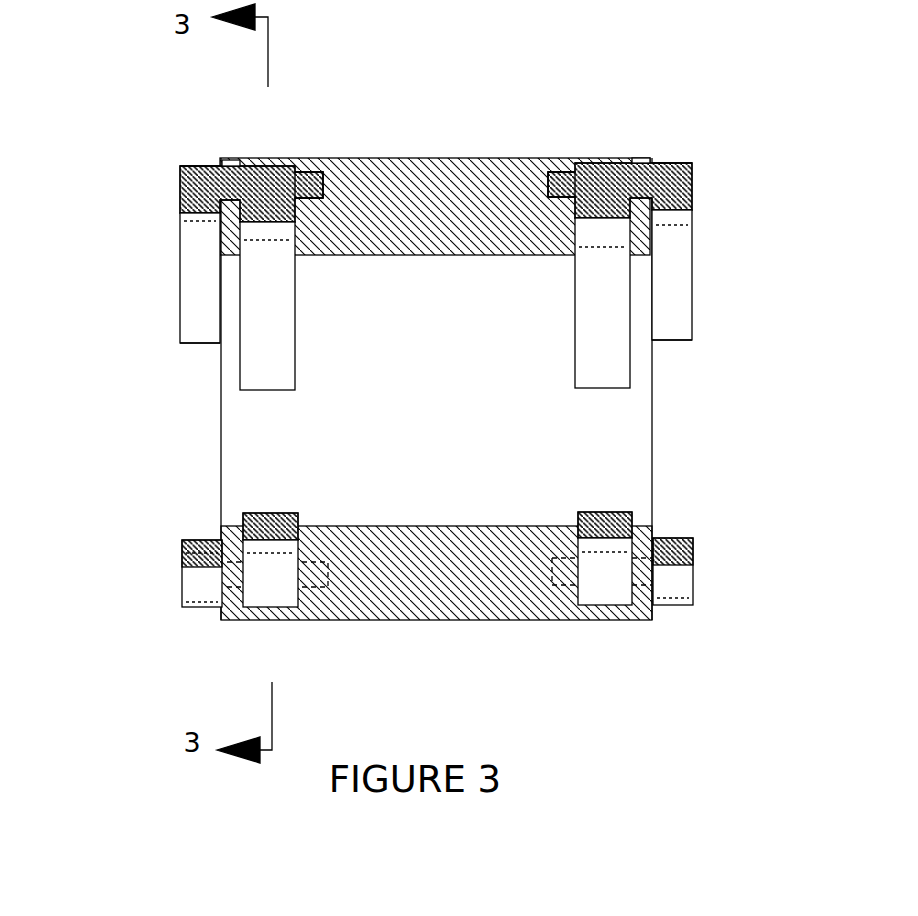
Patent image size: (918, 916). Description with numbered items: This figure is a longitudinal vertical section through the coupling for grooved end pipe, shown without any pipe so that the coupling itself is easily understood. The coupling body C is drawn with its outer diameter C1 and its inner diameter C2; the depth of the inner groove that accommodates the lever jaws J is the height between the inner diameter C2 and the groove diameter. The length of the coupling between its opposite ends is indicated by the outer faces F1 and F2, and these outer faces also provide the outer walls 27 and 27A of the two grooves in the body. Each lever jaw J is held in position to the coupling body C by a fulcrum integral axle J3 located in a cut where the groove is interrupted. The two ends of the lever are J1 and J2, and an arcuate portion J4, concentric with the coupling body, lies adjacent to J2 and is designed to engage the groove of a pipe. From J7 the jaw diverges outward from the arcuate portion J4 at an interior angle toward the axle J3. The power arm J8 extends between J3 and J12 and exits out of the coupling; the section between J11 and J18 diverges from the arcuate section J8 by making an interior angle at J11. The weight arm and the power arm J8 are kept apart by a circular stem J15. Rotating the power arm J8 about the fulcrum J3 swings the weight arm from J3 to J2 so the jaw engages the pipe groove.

The coupling body C is at (318, 168).
The outer diameter C1 is at (322, 166).
The inner diameter C2 is at (520, 255).
The outer face F1 is at (221, 460).
The outer face F2 is at (653, 495).
The outer wall 27 is at (221, 488).
The outer wall 27A is at (653, 458).
The lever jaw J is at (287, 182).
The lever end J1 is at (262, 185).
The lever end J2 is at (268, 390).
The fulcrum integral axle J3 is at (305, 185).
The arcuate portion J4 is at (297, 283).
The divergence point J7 is at (267, 243).
The power arm J8 is at (180, 268).
The divergence point J11 is at (198, 222).
The power arm end J12 is at (195, 341).
The circular stem J15 is at (241, 178).
The power arm section end J18 is at (185, 185).